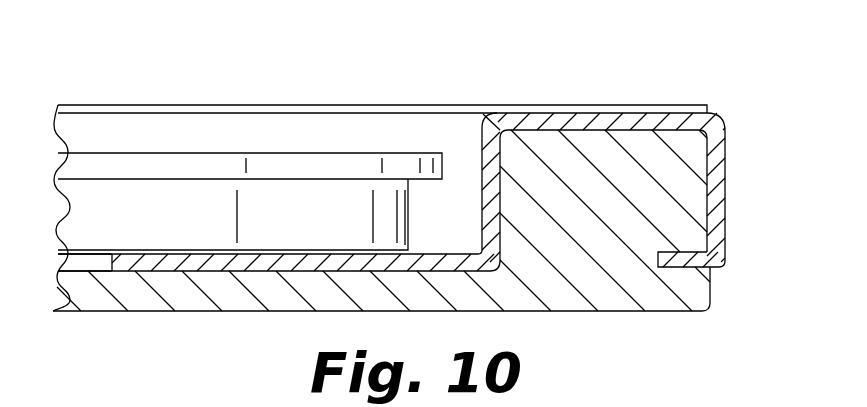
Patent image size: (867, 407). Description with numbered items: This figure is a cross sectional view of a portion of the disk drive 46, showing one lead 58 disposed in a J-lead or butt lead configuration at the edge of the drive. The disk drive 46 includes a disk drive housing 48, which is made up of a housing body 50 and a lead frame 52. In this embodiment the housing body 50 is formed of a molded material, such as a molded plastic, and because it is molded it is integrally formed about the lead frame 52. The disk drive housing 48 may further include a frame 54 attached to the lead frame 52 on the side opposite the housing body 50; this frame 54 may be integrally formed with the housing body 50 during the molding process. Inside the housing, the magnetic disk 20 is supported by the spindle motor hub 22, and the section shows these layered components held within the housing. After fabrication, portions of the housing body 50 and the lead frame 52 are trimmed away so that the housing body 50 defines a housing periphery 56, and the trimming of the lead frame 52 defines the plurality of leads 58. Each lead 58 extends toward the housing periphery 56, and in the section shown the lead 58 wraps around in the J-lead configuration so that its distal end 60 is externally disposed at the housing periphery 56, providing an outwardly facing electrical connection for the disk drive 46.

The magnetic disk 20 is at (162, 165).
The spindle motor hub 22 is at (137, 228).
The disk drive 46 is at (262, 82).
The disk drive housing 48 is at (108, 324).
The housing body 50 is at (160, 314).
The lead frame 52 is at (213, 268).
The frame 54 is at (520, 112).
The housing periphery 56 is at (715, 293).
The lead 58 is at (640, 115).
The distal end 60 is at (722, 200).